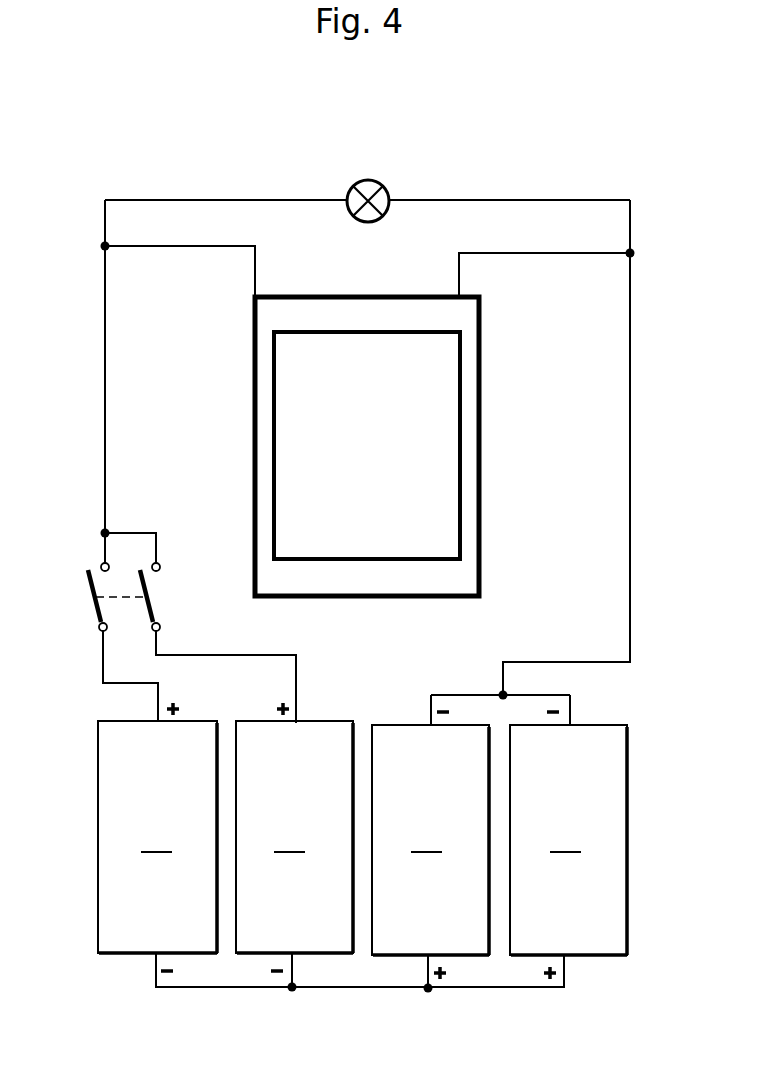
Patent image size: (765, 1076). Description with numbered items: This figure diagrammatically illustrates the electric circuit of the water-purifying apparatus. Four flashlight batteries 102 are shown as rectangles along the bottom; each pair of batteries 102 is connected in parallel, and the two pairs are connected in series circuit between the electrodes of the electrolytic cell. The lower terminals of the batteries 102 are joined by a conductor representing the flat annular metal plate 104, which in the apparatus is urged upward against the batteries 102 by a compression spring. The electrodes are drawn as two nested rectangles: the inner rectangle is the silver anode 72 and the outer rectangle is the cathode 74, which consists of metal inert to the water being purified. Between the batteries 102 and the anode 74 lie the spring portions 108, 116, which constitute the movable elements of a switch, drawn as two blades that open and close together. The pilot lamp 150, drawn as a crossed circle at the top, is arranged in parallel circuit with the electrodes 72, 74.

The pilot lamp 150 is at (357, 182).
The cathode 74 is at (482, 412).
The silver anode 72 is at (462, 368).
The spring portion 108 is at (89, 599).
The spring portion 116 is at (158, 598).
The flashlight batteries 102 is at (362, 841).
The annular metal plate 104 is at (226, 988).